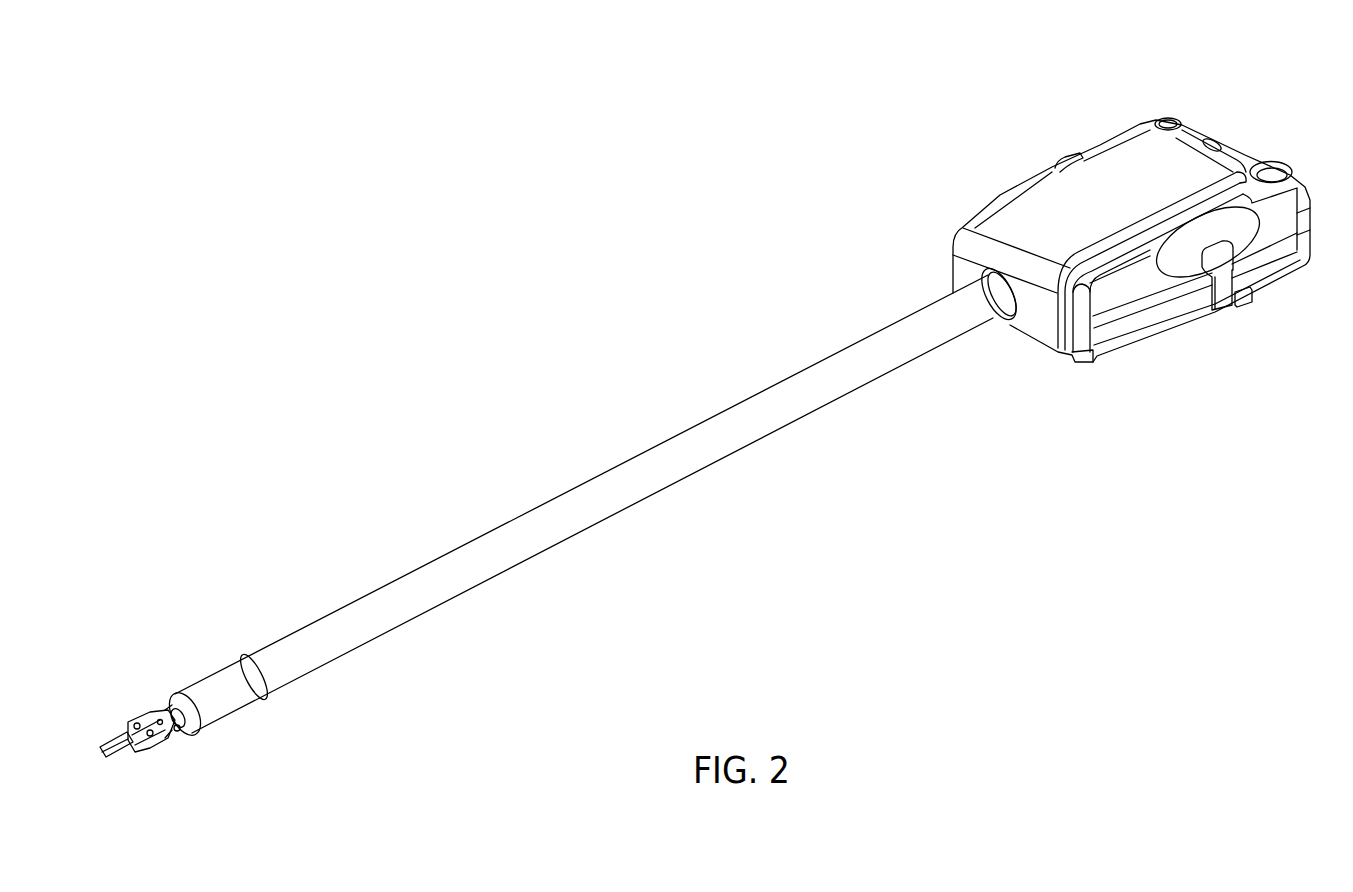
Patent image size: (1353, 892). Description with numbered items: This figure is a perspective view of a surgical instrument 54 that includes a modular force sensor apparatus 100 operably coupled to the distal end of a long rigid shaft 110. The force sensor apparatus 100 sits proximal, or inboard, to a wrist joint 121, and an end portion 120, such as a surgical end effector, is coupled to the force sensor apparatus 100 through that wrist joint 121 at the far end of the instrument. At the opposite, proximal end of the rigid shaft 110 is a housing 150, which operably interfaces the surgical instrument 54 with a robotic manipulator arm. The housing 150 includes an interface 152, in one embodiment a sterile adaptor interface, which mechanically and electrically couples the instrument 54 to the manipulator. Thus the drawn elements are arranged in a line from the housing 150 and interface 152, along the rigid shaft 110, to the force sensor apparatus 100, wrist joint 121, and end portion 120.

The surgical instrument 54 is at (982, 177).
The housing 150 is at (1190, 128).
The interface 152 is at (1257, 307).
The rigid shaft 110 is at (647, 478).
The modular force sensor apparatus 100 is at (230, 698).
The wrist joint 121 is at (185, 732).
The end portion 120 is at (122, 700).